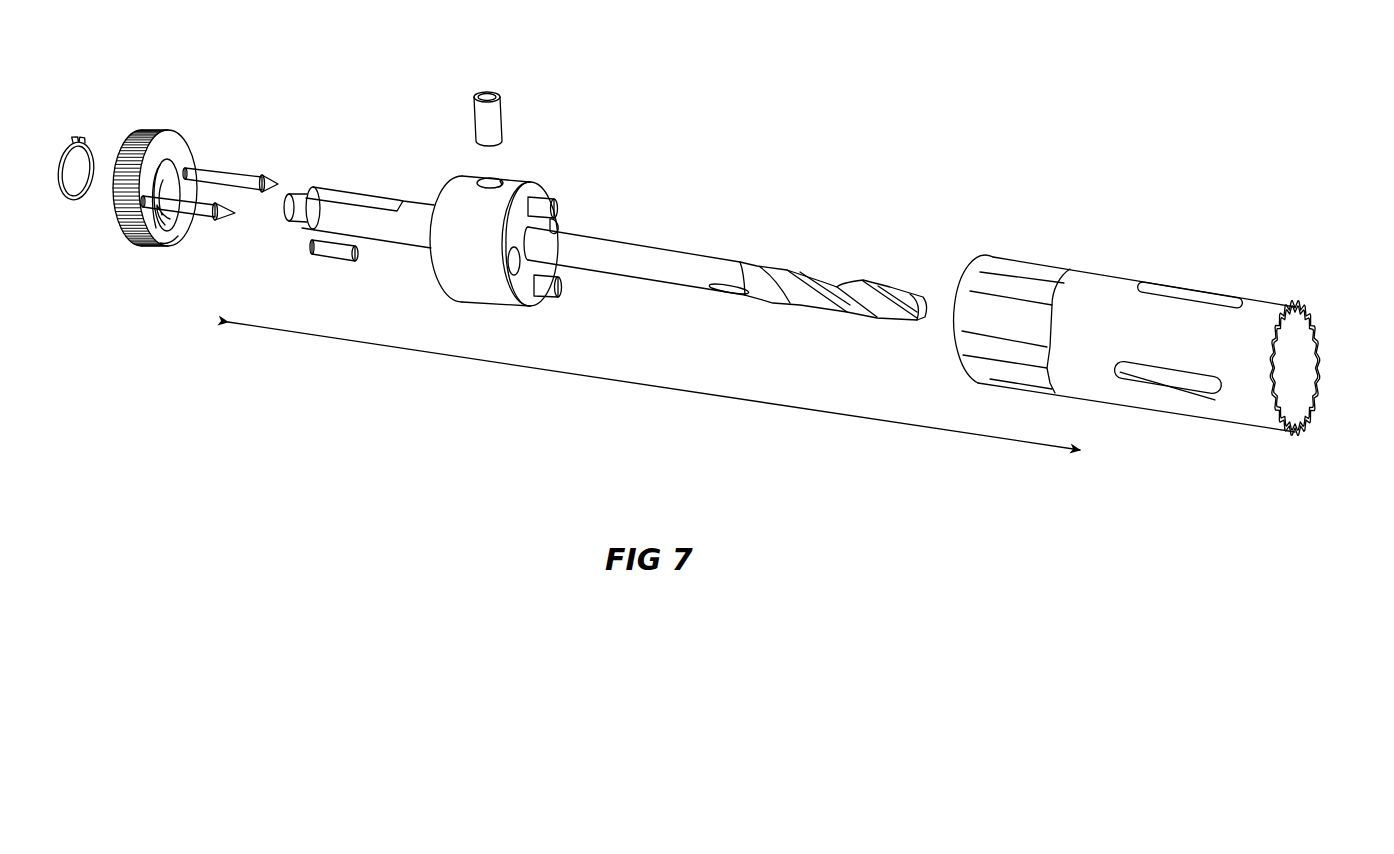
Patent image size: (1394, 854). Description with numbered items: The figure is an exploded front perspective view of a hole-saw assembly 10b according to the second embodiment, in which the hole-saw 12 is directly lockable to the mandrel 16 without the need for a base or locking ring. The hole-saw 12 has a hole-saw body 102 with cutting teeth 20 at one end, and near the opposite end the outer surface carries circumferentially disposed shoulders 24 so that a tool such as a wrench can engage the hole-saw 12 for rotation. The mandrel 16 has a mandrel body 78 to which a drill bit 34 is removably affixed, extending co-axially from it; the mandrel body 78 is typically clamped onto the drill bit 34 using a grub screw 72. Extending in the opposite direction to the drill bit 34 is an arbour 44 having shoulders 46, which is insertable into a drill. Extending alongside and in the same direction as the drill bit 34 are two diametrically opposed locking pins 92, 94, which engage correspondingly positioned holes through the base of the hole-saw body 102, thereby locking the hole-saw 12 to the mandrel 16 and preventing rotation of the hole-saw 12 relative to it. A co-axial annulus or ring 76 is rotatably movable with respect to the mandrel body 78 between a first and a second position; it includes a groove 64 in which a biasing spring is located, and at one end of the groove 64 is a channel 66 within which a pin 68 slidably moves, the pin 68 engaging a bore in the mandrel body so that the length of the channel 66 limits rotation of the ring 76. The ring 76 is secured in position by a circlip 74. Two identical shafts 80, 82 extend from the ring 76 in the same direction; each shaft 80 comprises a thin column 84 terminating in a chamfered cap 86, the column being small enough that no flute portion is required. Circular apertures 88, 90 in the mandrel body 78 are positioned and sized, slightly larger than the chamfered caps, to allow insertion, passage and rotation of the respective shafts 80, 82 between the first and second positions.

The hole-saw assembly 10b is at (855, 110).
The hole-saw 12 is at (1156, 277).
The mandrel 16 is at (551, 177).
The cutting teeth 20 is at (1318, 326).
The shoulders 24 is at (1000, 265).
The drill bit 34 is at (676, 277).
The arbour 44 is at (390, 235).
The shoulders 46 is at (349, 194).
The groove 64 is at (174, 227).
The channel 66 is at (162, 243).
The pin 68 is at (331, 251).
The grub screw 72 is at (497, 125).
The circlip 74 is at (77, 199).
The co-axial annulus or ring 76 is at (181, 148).
The mandrel body 78 is at (474, 280).
The shaft 80 is at (236, 161).
The shaft 82 is at (201, 238).
The column 84 is at (252, 172).
The chamfered cap 86 is at (276, 181).
The circular aperture 88 is at (558, 222).
The circular aperture 90 is at (518, 274).
The locking pin 92 is at (533, 205).
The locking pin 94 is at (562, 285).
The hole-saw body 102 is at (1072, 304).